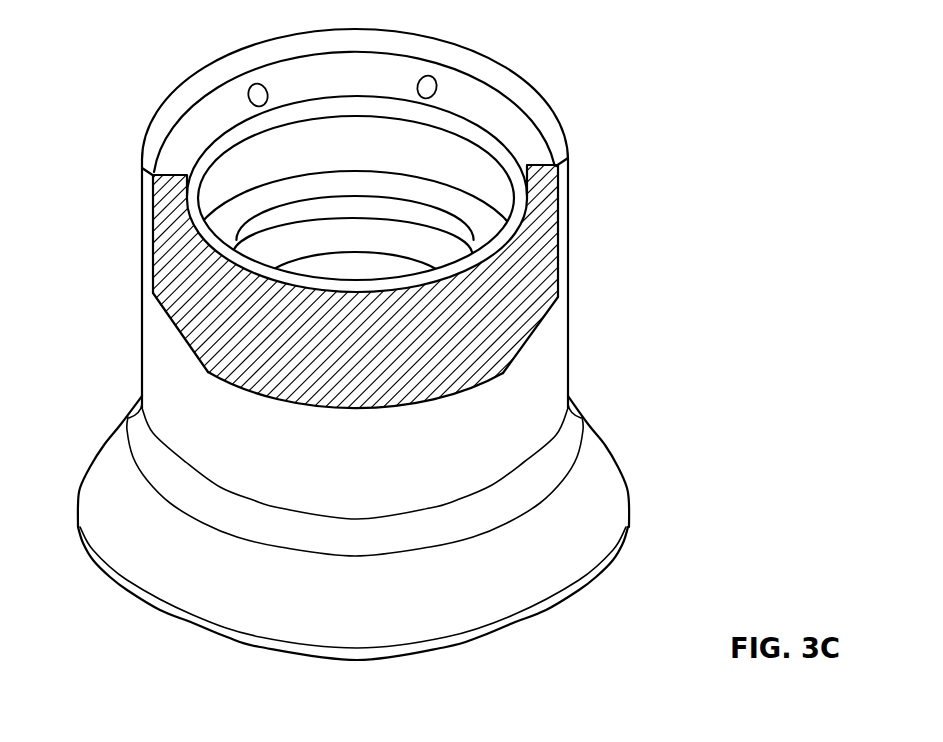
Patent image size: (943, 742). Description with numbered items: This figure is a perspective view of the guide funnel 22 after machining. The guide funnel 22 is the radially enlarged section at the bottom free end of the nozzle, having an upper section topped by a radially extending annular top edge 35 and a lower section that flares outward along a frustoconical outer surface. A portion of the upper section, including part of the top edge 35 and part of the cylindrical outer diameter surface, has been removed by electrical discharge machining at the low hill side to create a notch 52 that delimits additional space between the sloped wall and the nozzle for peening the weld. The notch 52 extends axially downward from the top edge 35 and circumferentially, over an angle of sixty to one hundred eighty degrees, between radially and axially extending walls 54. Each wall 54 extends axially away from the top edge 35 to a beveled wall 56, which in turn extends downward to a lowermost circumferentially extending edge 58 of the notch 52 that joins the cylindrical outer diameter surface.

The guide funnel 22 is at (402, 344).
The annular top edge 35 is at (540, 128).
The notch 52 is at (428, 418).
The walls 54 is at (172, 197).
The beveled wall 56 is at (178, 332).
The lowermost circumferentially extending edge 58 is at (347, 410).